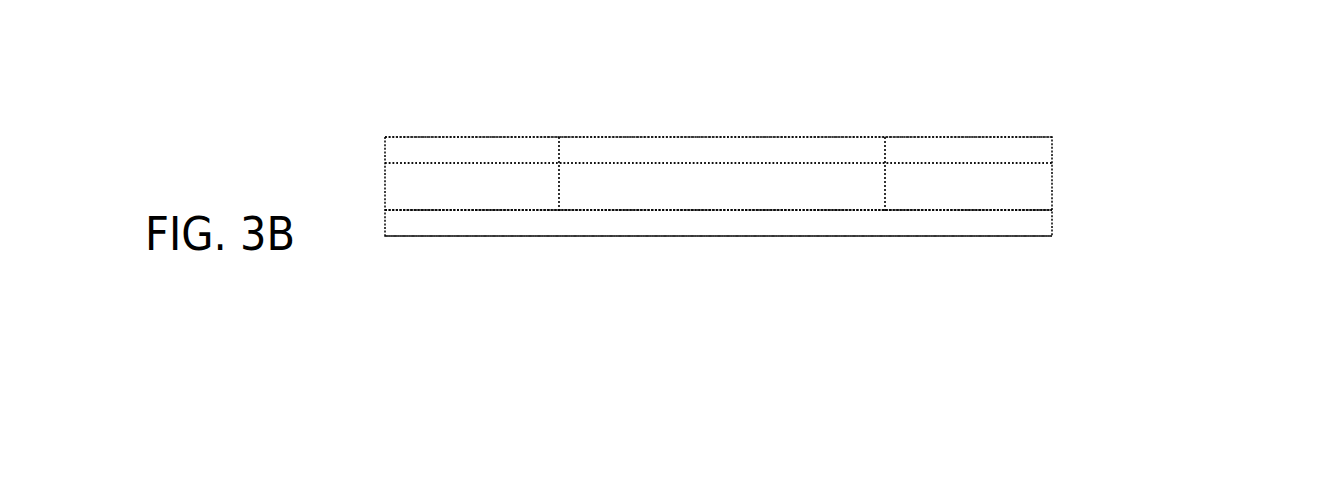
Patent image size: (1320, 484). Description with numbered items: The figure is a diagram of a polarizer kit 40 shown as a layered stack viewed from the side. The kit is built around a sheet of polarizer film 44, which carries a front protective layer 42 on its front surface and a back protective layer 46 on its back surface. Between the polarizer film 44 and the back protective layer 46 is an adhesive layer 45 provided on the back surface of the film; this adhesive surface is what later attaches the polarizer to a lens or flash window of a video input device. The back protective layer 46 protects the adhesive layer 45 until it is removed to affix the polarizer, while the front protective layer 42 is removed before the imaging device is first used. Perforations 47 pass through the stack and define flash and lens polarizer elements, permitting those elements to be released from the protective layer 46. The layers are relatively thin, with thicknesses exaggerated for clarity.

The polarizer kit 40 is at (495, 108).
The front protective layer 42 is at (498, 137).
The polarizer film 44 is at (1050, 188).
The adhesive layer 45 is at (980, 208).
The back protective layer 46 is at (920, 233).
The perforations 47 is at (885, 153).